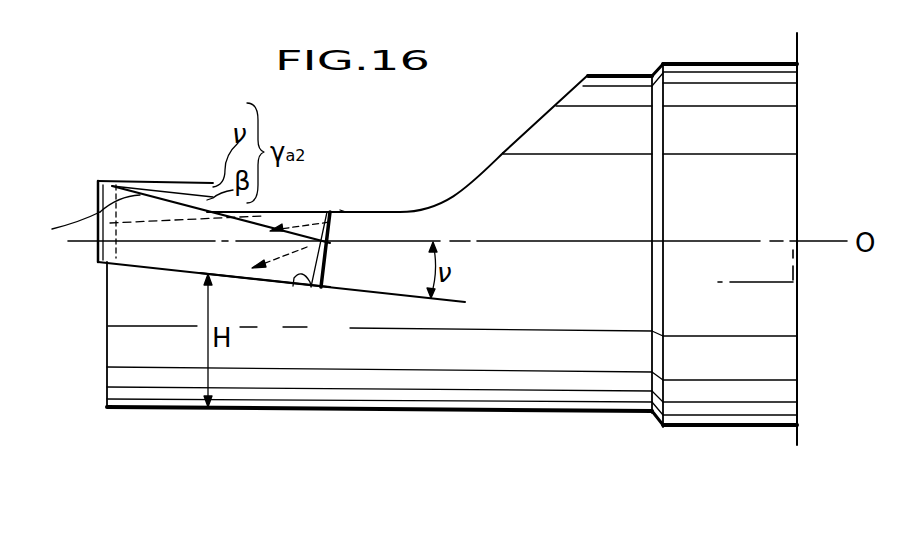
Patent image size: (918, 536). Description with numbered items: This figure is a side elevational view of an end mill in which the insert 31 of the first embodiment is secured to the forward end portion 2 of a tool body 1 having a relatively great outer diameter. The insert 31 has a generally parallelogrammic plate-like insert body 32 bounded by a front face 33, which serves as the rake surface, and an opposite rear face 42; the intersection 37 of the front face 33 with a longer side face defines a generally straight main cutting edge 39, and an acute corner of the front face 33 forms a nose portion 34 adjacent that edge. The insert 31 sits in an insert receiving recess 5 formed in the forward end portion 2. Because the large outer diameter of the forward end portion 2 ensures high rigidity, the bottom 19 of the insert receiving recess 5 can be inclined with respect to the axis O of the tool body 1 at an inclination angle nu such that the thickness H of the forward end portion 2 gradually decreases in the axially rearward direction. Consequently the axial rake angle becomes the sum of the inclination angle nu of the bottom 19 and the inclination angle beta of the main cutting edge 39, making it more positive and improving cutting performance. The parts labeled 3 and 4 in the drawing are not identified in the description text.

The tool body 1 is at (738, 72).
The forward end portion 2 is at (549, 433).
The chamfer 3 is at (532, 103).
The rake surface curve 4 is at (505, 152).
The insert receiving recess 5 is at (333, 233).
The bottom 19 is at (310, 287).
The insert 31 is at (204, 196).
The insert body 32 is at (250, 212).
The front face 33 is at (286, 237).
The nose portion 34 is at (99, 178).
The intersection 37 is at (58, 230).
The main cutting edge 39 is at (98, 201).
The rear face 42 is at (266, 285).